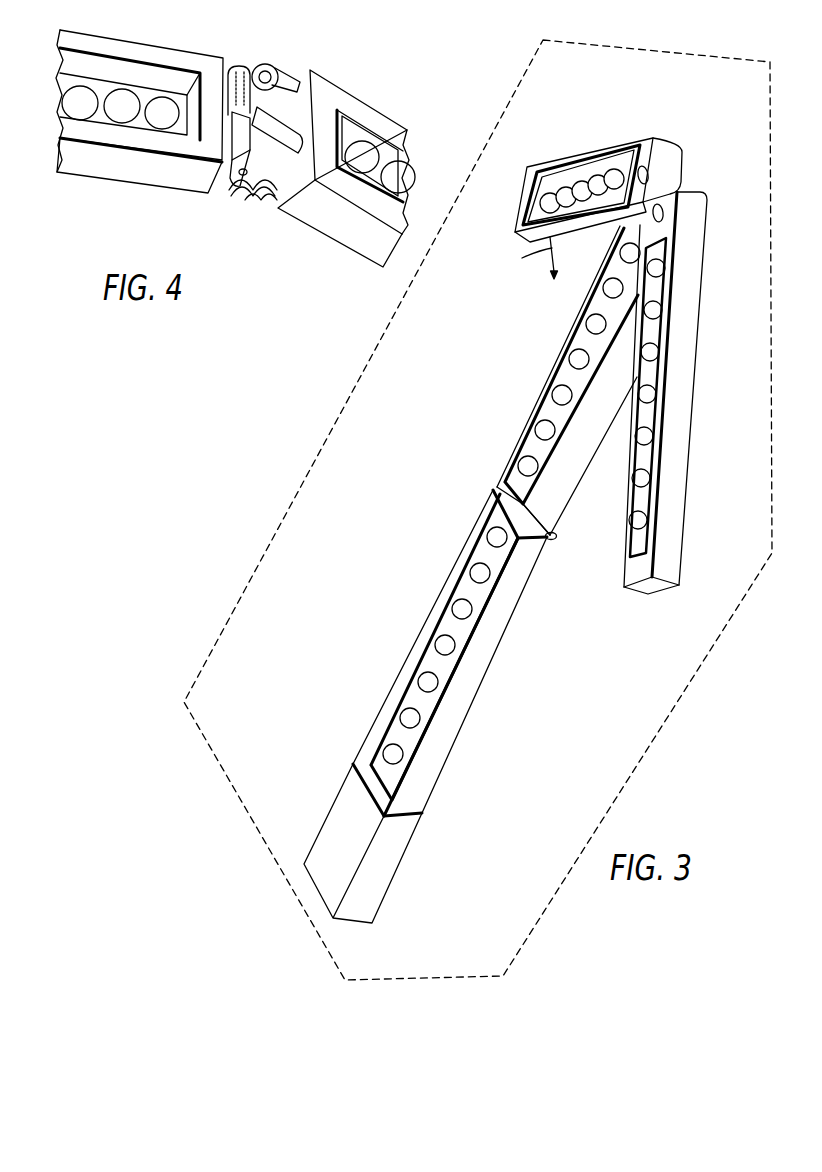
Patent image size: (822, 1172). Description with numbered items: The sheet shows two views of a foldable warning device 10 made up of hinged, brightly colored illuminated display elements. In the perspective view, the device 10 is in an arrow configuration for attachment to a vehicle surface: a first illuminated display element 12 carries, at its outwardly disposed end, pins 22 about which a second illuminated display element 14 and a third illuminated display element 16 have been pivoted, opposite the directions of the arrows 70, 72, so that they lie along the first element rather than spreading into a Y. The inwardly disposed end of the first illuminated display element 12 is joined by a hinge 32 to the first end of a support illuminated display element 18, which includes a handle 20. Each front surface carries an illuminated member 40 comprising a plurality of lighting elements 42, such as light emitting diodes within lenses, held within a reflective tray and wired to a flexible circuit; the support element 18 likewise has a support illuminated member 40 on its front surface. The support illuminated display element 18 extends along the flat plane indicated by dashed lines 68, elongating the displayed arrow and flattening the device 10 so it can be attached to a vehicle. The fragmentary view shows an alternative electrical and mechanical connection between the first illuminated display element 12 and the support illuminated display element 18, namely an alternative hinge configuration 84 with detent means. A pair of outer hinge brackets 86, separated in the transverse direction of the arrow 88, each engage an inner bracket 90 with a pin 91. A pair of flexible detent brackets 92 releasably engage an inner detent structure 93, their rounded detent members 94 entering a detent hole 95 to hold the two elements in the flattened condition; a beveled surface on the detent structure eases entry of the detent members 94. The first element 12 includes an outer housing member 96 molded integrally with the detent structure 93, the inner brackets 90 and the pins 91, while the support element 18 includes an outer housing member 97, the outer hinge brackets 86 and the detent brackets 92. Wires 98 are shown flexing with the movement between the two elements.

In FIG. 3, the foldable warning device 10 is at (492, 312).
In FIG. 3, the first illuminated display element 12 is at (490, 513).
In FIG. 4, the first illuminated display element 12 is at (68, 181).
In FIG. 3, the second illuminated display element 14 is at (693, 377).
In FIG. 3, the third illuminated display element 16 is at (566, 158).
In FIG. 3, the support illuminated display element 18 is at (442, 591).
In FIG. 4, the support illuminated display element 18 is at (358, 263).
In FIG. 3, the handle 20 is at (338, 796).
In FIG. 3, the pins 22 is at (630, 166).
In FIG. 3, the hinge 32 is at (556, 541).
In FIG. 3, the illuminated member 40 is at (523, 427).
In FIG. 3, the lighting elements 42 is at (566, 363).
In FIG. 3, the dashed lines 68 is at (318, 433).
In FIG. 3, the arrow 70 is at (577, 527).
In FIG. 3, the arrow 72 is at (527, 258).
In FIG. 4, the alternative hinge configuration 84 is at (265, 56).
In FIG. 4, the outer hinge brackets 86 is at (249, 180).
In FIG. 4, the arrow 88 is at (208, 232).
In FIG. 4, the inner bracket 90 is at (228, 165).
In FIG. 4, the pin 91 is at (240, 182).
In FIG. 4, the detent brackets 92 is at (247, 138).
In FIG. 4, the inner detent structure 93 is at (233, 62).
In FIG. 4, the rounded detent members 94 is at (276, 72).
In FIG. 4, the detent hole 95 is at (235, 128).
In FIG. 4, the outer housing member 96 is at (118, 188).
In FIG. 4, the outer housing member 97 is at (330, 243).
In FIG. 4, the wires 98 is at (248, 212).